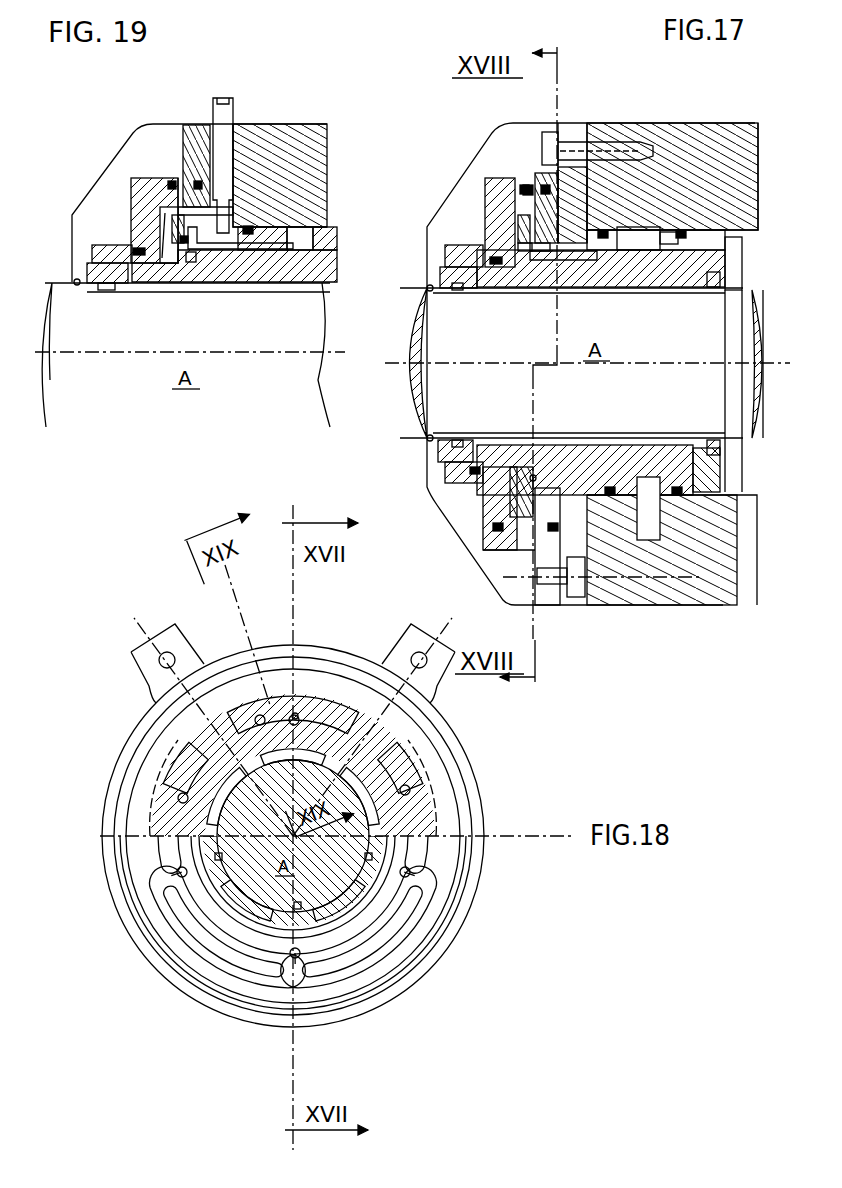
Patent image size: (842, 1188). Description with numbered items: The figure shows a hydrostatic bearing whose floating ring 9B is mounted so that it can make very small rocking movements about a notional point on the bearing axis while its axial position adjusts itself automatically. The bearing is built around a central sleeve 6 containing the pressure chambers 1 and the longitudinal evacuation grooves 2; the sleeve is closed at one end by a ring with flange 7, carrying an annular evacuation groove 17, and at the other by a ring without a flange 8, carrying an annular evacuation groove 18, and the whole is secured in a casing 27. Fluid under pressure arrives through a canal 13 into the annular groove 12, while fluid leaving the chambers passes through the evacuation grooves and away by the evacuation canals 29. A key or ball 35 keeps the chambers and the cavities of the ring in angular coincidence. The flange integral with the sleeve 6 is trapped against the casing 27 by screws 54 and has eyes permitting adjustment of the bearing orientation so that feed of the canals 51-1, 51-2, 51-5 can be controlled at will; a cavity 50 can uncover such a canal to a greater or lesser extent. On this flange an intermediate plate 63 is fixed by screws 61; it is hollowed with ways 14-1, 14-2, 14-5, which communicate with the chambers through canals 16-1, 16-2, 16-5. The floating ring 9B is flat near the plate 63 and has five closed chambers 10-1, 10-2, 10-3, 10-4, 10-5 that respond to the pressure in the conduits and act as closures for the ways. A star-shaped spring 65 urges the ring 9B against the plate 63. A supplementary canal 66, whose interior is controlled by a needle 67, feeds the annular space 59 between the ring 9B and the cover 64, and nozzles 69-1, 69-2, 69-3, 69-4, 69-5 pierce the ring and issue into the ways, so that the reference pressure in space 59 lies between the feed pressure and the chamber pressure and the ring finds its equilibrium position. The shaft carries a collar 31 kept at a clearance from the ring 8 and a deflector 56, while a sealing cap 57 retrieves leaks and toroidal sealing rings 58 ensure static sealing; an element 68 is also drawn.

In FIG. 19, the pressure chambers 1 is at (292, 288).
In FIG. 17, the pressure chambers 1 is at (652, 292).
In FIG. 18, the pressure chambers 1 is at (295, 837).
In FIG. 17, the evacuation grooves 2 is at (622, 450).
In FIG. 18, the evacuation grooves 2 is at (293, 832).
In FIG. 19, the central sleeve 6 is at (242, 268).
In FIG. 17, the central sleeve 6 is at (578, 455).
In FIG. 18, the central sleeve 6 is at (370, 760).
In FIG. 19, the ring with flange 7 is at (113, 285).
In FIG. 17, the ring with flange 7 is at (465, 292).
In FIG. 17, the ring without a flange 8 is at (722, 280).
In FIG. 19, the floating ring 9B is at (170, 190).
In FIG. 17, the floating ring 9B is at (500, 200).
In FIG. 18, the floating ring 9B is at (425, 897).
In FIG. 19, the closed chamber 10-1 is at (172, 225).
In FIG. 17, the closed chamber 10-1 is at (530, 230).
In FIG. 18, the closed chamber 10-2 is at (160, 850).
In FIG. 18, the closed chamber 10-3 is at (190, 918).
In FIG. 18, the closed chamber 10-4 is at (400, 930).
In FIG. 18, the closed chamber 10-5 is at (428, 850).
In FIG. 19, the annular groove 12 is at (300, 230).
In FIG. 17, the annular groove 12 is at (668, 232).
In FIG. 17, the canal 13 is at (650, 540).
In FIG. 19, the way 14-1 is at (188, 262).
In FIG. 17, the way 14-1 is at (525, 265).
In FIG. 18, the way 14-1 is at (330, 758).
In FIG. 18, the way 14-2 is at (200, 748).
In FIG. 18, the way 14-5 is at (388, 768).
In FIG. 17, the canal 16-1 is at (547, 285).
In FIG. 18, the canal 16-1 is at (308, 720).
In FIG. 18, the canal 16-2 is at (185, 752).
In FIG. 18, the canal 16-5 is at (420, 800).
In FIG. 19, the annular evacuation groove 17 is at (104, 290).
In FIG. 17, the annular evacuation groove 17 is at (456, 290).
In FIG. 17, the annular evacuation groove 18 is at (742, 262).
In FIG. 19, the casing 27 is at (288, 140).
In FIG. 17, the casing 27 is at (712, 135).
In FIG. 17, the evacuation canal 29 is at (688, 450).
In FIG. 17, the collar 31 is at (748, 350).
In FIG. 17, the key or ball 35 is at (537, 475).
In FIG. 18, the key or ball 35 is at (412, 875).
In FIG. 17, the cavity 50 is at (638, 228).
In FIG. 17, the feed canal 51-1 is at (580, 265).
In FIG. 18, the feed canal 51-1 is at (298, 715).
In FIG. 18, the feed canal 51-2 is at (175, 790).
In FIG. 18, the feed canal 51-5 is at (405, 760).
In FIG. 17, the screw 54 is at (550, 138).
In FIG. 19, the deflector 56 is at (74, 280).
In FIG. 17, the deflector 56 is at (425, 442).
In FIG. 19, the sealing cap 57 is at (78, 212).
In FIG. 17, the sealing cap 57 is at (440, 185).
In FIG. 19, the sealing rings 58 is at (140, 256).
In FIG. 17, the sealing rings 58 is at (490, 255).
In FIG. 19, the annular space 59 is at (165, 213).
In FIG. 17, the annular space 59 is at (515, 505).
In FIG. 17, the screw 61 is at (578, 598).
In FIG. 19, the intermediate plate 63 is at (193, 130).
In FIG. 17, the intermediate plate 63 is at (547, 600).
In FIG. 19, the cover 64 is at (140, 180).
In FIG. 17, the cover 64 is at (515, 548).
In FIG. 17, the star-shaped spring 65 is at (487, 520).
In FIG. 19, the supplementary canal 66 is at (210, 252).
In FIG. 18, the supplementary canal 66 is at (262, 715).
In FIG. 19, the needle 67 is at (226, 112).
In FIG. 19, the ring 68 is at (100, 248).
In FIG. 17, the ring 68 is at (460, 475).
In FIG. 17, the nozzle 69-1 is at (523, 192).
In FIG. 18, the nozzle 69-1 is at (296, 712).
In FIG. 18, the nozzle 69-2 is at (178, 798).
In FIG. 18, the nozzle 69-3 is at (225, 945).
In FIG. 18, the nozzle 69-4 is at (365, 945).
In FIG. 18, the nozzle 69-5 is at (412, 790).